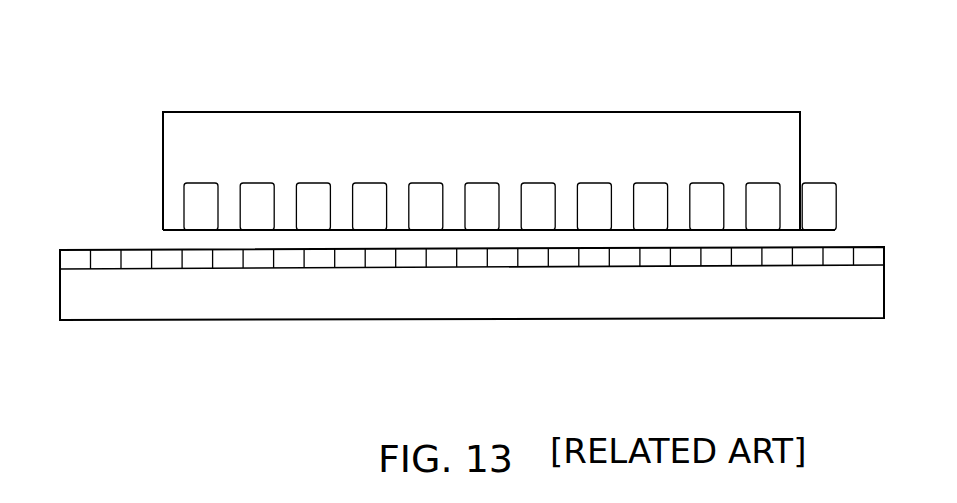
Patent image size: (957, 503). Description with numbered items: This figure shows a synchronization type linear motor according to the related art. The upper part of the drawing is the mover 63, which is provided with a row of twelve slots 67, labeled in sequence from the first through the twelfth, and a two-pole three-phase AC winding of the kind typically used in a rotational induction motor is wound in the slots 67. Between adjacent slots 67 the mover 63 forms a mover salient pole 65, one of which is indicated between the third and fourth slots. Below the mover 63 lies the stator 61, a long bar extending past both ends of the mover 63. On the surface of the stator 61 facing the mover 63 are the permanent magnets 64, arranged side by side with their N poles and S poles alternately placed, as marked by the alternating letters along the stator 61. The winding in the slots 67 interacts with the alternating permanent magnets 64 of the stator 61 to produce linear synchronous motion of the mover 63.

The stator 61 is at (448, 307).
The mover 63 is at (479, 140).
The permanent magnets 64 is at (357, 260).
The mover salient pole 65 is at (337, 218).
The slots 67 is at (311, 187).